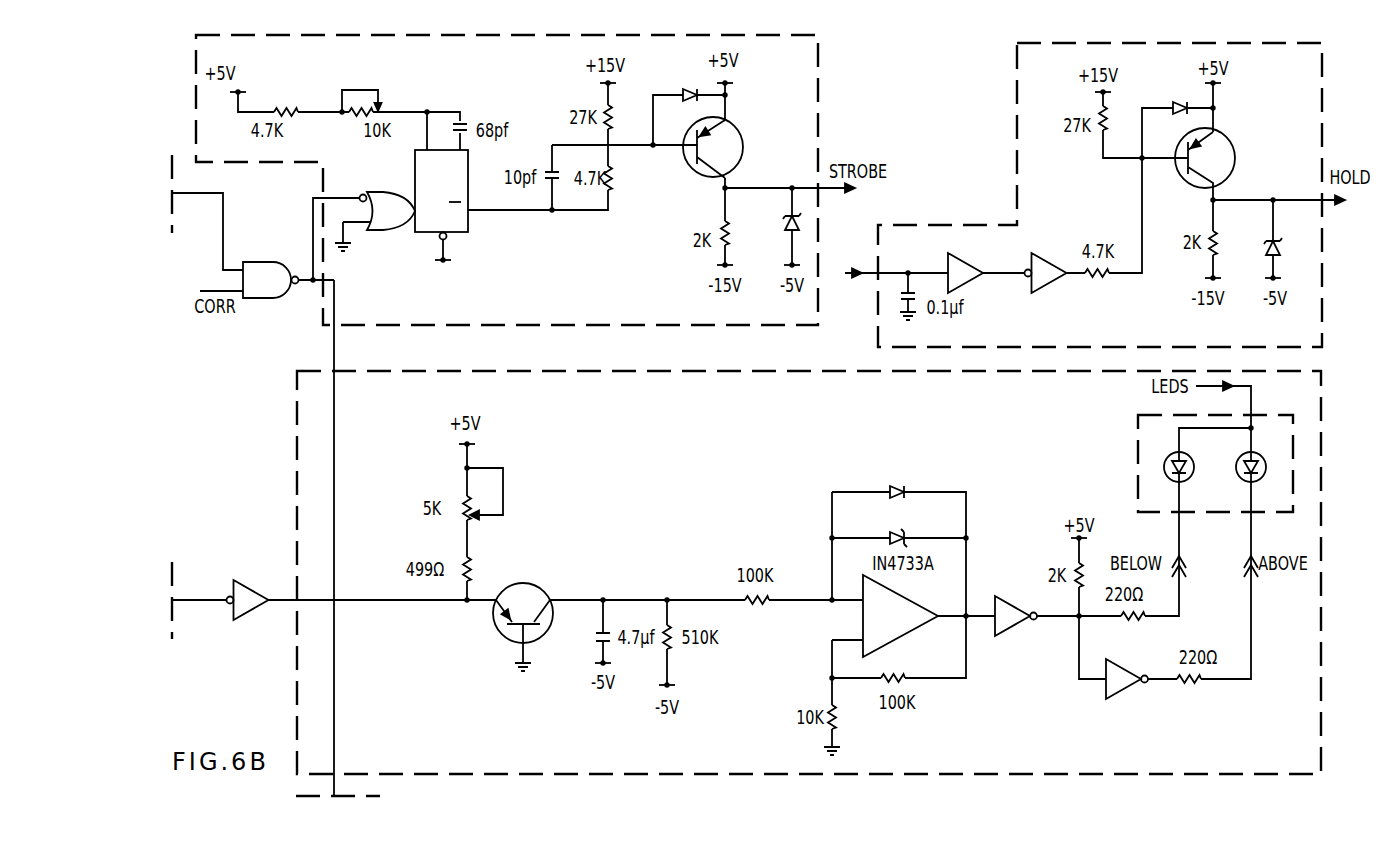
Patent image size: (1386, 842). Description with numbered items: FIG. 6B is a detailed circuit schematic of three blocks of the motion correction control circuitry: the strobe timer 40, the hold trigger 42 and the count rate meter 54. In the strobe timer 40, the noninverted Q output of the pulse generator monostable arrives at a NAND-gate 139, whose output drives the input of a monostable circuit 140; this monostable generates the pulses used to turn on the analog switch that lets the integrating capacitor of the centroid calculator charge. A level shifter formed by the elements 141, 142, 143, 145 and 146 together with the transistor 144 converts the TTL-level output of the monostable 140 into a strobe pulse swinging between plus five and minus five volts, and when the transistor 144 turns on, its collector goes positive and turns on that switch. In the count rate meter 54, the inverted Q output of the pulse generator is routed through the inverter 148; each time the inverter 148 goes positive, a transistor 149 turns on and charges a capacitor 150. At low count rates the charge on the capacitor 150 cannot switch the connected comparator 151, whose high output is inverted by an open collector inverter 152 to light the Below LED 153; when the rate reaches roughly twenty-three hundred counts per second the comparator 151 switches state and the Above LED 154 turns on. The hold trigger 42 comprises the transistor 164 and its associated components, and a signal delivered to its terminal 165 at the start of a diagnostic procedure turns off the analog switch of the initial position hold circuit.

The strobe timer 40 is at (582, 312).
The hold trigger 42 is at (1095, 329).
The count rate meter 54 is at (516, 737).
The NAND-gate 139 is at (265, 296).
The 9602 monostable circuit 140 is at (415, 166).
The level shifter element 141 is at (613, 178).
The level shifter element 142 is at (613, 117).
The level shifter element 143 is at (689, 88).
The transistor 144 is at (733, 143).
The level shifter element 145 is at (720, 226).
The level shifter element 146 is at (786, 220).
The inverter 148 is at (243, 612).
The transistor 149 is at (532, 592).
The capacitor 150 is at (595, 636).
The 741 comparator 151 is at (876, 620).
The open collector inverter 152 is at (1008, 612).
The Below LED 153 is at (1164, 465).
The Above LED 154 is at (1259, 483).
The transistor 164 is at (1226, 164).
The terminal 165 is at (866, 278).